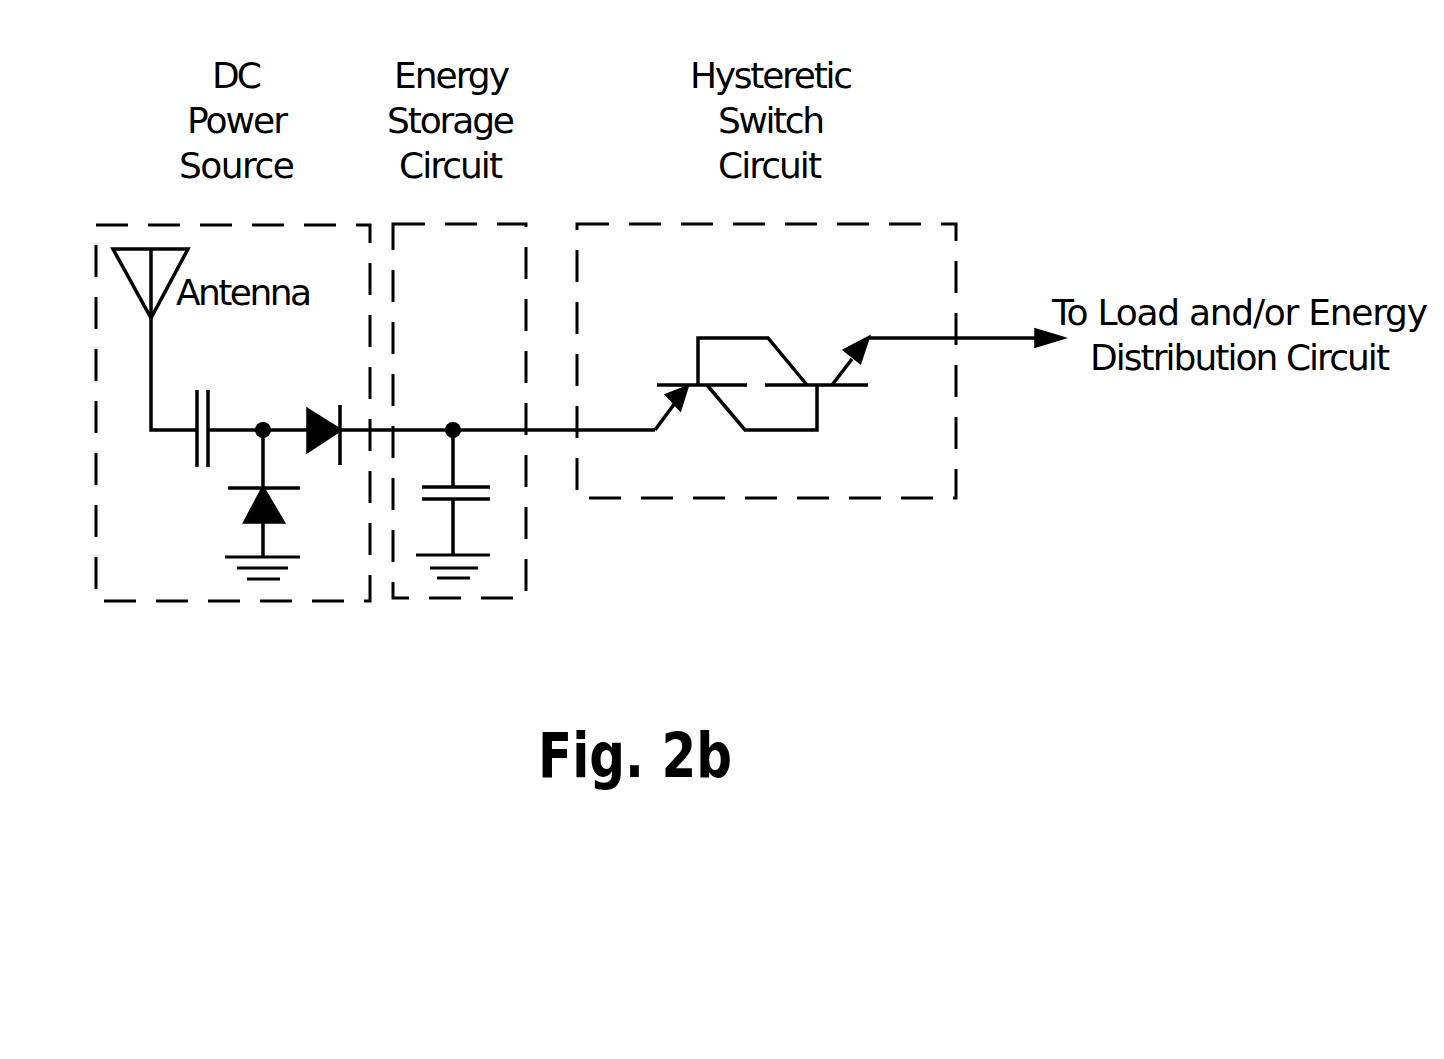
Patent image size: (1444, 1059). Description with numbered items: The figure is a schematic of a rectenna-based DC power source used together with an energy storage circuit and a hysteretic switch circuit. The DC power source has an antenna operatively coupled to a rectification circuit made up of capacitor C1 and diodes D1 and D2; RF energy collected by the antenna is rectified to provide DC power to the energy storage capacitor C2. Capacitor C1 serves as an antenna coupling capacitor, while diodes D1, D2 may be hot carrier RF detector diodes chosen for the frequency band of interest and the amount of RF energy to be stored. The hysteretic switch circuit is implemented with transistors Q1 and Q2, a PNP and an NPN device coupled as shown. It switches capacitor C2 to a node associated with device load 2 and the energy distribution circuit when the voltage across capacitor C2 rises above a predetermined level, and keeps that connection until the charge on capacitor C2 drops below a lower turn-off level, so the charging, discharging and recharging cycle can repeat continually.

The device load 2 is at (526, 392).
The capacitor C1 is at (230, 421).
The diode D1 is at (358, 420).
The diode D2 is at (249, 504).
The capacitor C2 is at (464, 504).
The transistor Q1 is at (736, 416).
The transistor Q2 is at (880, 357).